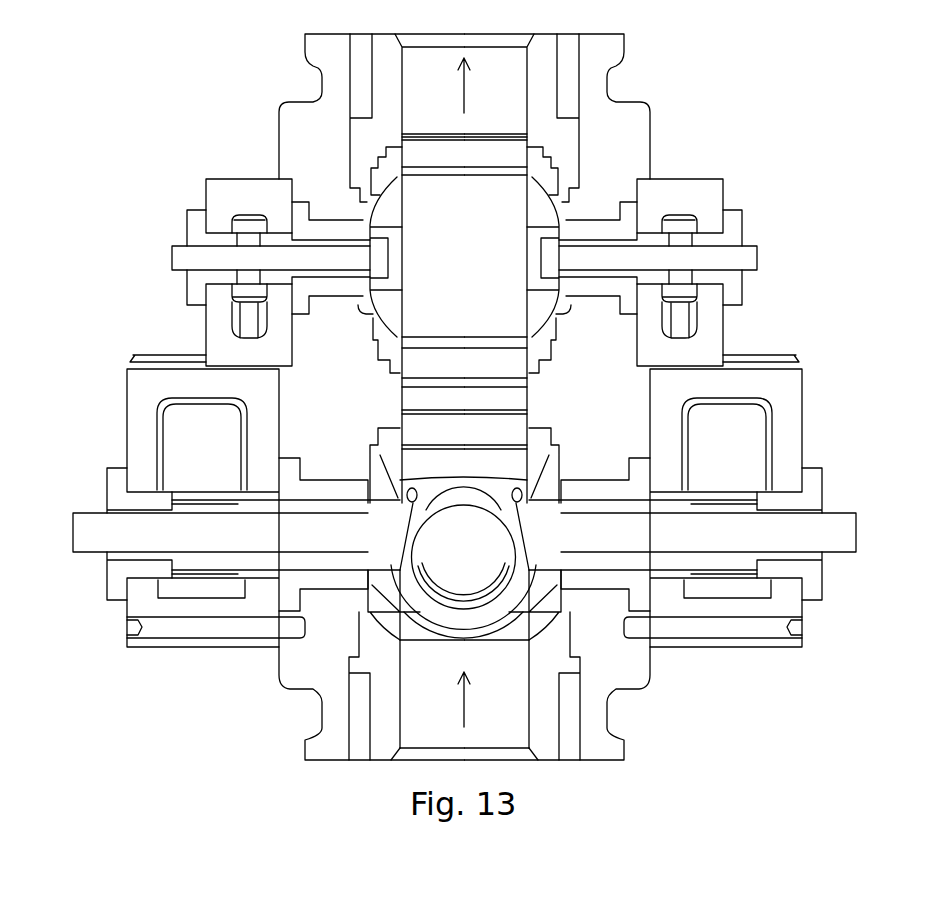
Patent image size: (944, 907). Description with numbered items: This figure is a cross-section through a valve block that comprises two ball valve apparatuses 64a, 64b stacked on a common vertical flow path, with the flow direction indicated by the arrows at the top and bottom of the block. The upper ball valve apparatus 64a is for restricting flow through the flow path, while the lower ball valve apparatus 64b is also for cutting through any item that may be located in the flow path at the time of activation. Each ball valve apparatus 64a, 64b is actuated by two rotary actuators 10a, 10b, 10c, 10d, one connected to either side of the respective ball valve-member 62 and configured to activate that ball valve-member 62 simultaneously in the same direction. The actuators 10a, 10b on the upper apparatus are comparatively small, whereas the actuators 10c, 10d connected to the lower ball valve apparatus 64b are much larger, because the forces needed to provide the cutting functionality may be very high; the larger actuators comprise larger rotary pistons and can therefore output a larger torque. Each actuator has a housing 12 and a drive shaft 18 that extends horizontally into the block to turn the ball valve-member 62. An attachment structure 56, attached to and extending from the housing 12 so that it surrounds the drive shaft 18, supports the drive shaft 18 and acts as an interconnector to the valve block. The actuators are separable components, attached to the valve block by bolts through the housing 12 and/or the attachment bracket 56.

The actuator 10a is at (188, 184).
The actuator 10b is at (753, 198).
The actuator 10c is at (73, 600).
The actuator 10d is at (838, 587).
The housing 12 is at (266, 209).
The drive shaft 18 is at (318, 268).
The attachment structure 56 is at (598, 290).
The ball valve-member 62 is at (392, 204).
The upper ball valve apparatus 64a is at (593, 197).
The lower ball valve apparatus 64b is at (568, 458).